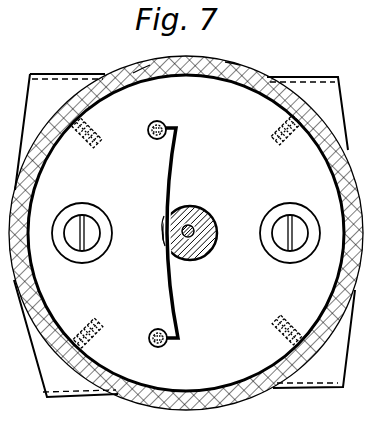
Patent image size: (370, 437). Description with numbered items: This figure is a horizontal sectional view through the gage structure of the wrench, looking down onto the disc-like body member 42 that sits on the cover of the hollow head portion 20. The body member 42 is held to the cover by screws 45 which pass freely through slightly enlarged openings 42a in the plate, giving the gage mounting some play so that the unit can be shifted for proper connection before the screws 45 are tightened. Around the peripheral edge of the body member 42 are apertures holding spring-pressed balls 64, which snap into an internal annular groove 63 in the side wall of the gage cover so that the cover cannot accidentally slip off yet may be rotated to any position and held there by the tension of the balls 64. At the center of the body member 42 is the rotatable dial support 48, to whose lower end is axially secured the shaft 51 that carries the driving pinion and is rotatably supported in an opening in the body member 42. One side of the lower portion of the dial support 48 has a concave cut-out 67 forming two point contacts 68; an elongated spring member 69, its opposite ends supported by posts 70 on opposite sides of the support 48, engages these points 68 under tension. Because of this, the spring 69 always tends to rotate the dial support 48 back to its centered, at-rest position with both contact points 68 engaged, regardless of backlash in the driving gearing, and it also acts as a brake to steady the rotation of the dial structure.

The hollow head portion 20 is at (68, 82).
The disc-like body member 42 is at (243, 97).
The enlarged openings 42a is at (140, 60).
The internal annular groove 63 is at (236, 66).
The spring-pressed balls 64 is at (90, 145).
The screws 45 is at (90, 252).
The rotatable dial support 48 is at (212, 213).
The shaft 51 is at (188, 251).
The elongated spring member 69 is at (170, 162).
The posts 70 is at (150, 124).
The point contacts 68 is at (162, 217).
The concave cut-out 67 is at (163, 235).